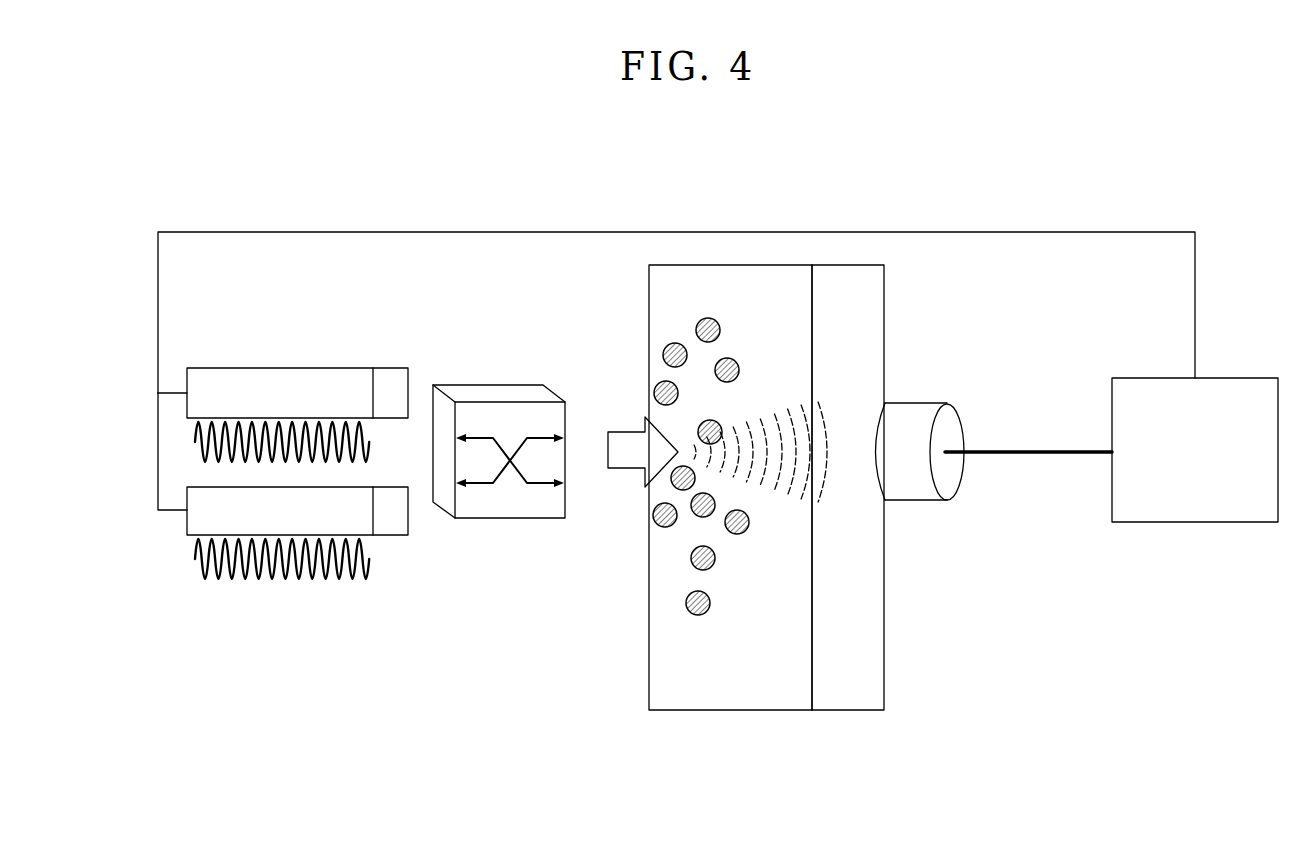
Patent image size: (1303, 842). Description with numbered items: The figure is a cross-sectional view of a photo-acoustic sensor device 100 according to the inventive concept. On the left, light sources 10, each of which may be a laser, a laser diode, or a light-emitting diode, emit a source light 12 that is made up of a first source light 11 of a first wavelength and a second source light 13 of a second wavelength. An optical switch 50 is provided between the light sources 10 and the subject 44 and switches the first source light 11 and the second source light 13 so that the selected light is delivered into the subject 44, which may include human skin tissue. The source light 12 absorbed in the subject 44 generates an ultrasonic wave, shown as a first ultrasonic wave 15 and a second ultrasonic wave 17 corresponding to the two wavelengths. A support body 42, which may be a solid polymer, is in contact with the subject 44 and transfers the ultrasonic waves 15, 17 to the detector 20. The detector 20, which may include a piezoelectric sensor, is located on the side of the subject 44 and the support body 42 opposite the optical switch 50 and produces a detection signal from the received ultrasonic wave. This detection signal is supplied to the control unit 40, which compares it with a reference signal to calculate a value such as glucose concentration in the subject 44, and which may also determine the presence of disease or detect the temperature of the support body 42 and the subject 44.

The photo-acoustic sensor device 100 is at (1113, 181).
The light sources 10 is at (205, 485).
The first source light 11 is at (245, 465).
The source light 12 is at (231, 503).
The second source light 13 is at (203, 567).
The optical switch 50 is at (479, 487).
The subject 44 is at (727, 702).
The support body 42 is at (848, 702).
The first ultrasonic wave 15 is at (842, 497).
The second ultrasonic wave 17 is at (827, 493).
The detector 20 is at (950, 483).
The control unit 40 is at (1226, 377).